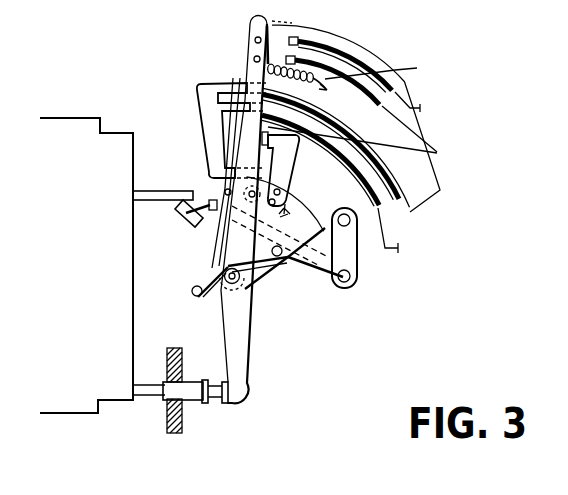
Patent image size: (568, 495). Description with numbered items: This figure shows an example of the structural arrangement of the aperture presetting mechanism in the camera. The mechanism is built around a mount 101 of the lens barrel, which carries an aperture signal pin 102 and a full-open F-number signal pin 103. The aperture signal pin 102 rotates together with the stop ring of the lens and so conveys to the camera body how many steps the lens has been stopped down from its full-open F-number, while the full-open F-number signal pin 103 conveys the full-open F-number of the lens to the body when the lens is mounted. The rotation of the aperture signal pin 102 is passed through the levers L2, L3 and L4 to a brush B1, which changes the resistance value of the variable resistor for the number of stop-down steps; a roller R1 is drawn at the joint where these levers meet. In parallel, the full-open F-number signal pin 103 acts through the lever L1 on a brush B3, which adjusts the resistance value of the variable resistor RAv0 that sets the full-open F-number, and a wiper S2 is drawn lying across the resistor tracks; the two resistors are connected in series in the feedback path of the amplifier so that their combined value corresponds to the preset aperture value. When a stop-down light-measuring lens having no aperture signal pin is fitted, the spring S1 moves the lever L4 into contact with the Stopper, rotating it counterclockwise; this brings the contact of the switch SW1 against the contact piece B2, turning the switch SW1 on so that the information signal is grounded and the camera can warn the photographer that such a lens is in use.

The mount 101 is at (82, 119).
The aperture signal pin 102 is at (163, 191).
The full-open F-number signal pin 103 is at (146, 392).
The stopper Stopper is at (180, 212).
The lever L1 is at (237, 367).
The lever L2 is at (325, 274).
The lever L3 is at (359, 252).
The lever L4 is at (216, 248).
The roller R1 is at (221, 288).
The spring S1 is at (268, 280).
The wiper contact S2 is at (369, 79).
The brush B1 is at (197, 116).
The contact piece B2 is at (288, 164).
The brush B3 is at (252, 33).
The switch SW1 is at (371, 147).
The variable resistor R_AVO RAv0 is at (380, 78).